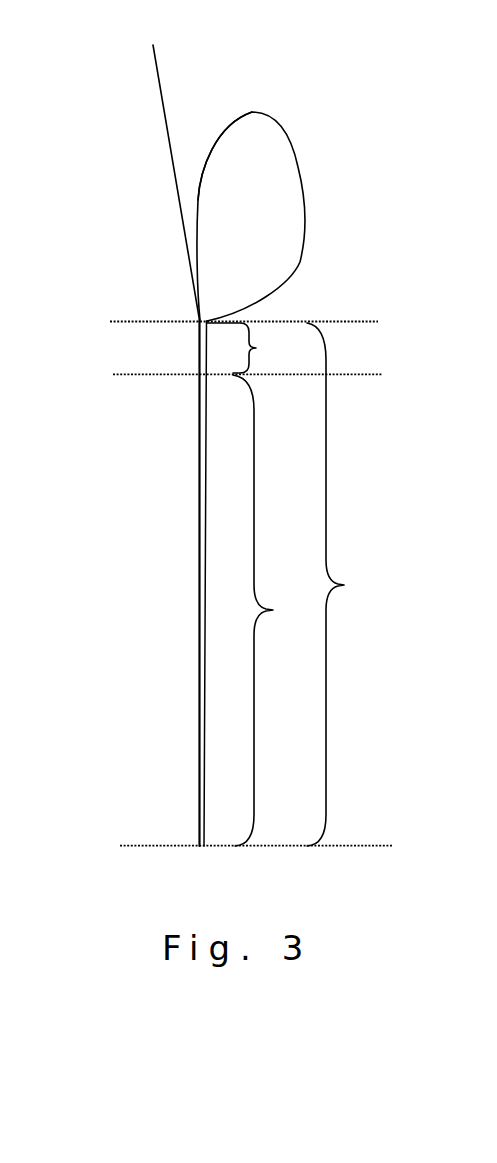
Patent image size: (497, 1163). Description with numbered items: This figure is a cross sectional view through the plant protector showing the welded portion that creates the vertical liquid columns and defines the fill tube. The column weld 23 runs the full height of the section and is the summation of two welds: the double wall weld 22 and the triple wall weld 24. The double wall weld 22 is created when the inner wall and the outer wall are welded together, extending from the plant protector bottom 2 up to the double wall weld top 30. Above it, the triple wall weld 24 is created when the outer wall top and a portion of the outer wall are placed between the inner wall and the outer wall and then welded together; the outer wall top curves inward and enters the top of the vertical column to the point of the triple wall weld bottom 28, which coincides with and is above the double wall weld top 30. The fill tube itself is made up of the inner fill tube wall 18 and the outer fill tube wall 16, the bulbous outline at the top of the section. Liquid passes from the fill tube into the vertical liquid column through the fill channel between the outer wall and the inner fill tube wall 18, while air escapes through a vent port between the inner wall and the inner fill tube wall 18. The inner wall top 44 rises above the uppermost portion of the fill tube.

The plant protector bottom 2 is at (200, 846).
The outer fill tube wall 16 is at (298, 168).
The inner fill tube wall 18 is at (207, 163).
The double wall weld 22 is at (274, 610).
The column weld 23 is at (256, 584).
The triple wall weld 24 is at (256, 348).
The triple wall weld bottom 28 is at (207, 375).
The double wall weld top 30 is at (200, 375).
The inner wall top 44 is at (135, 171).